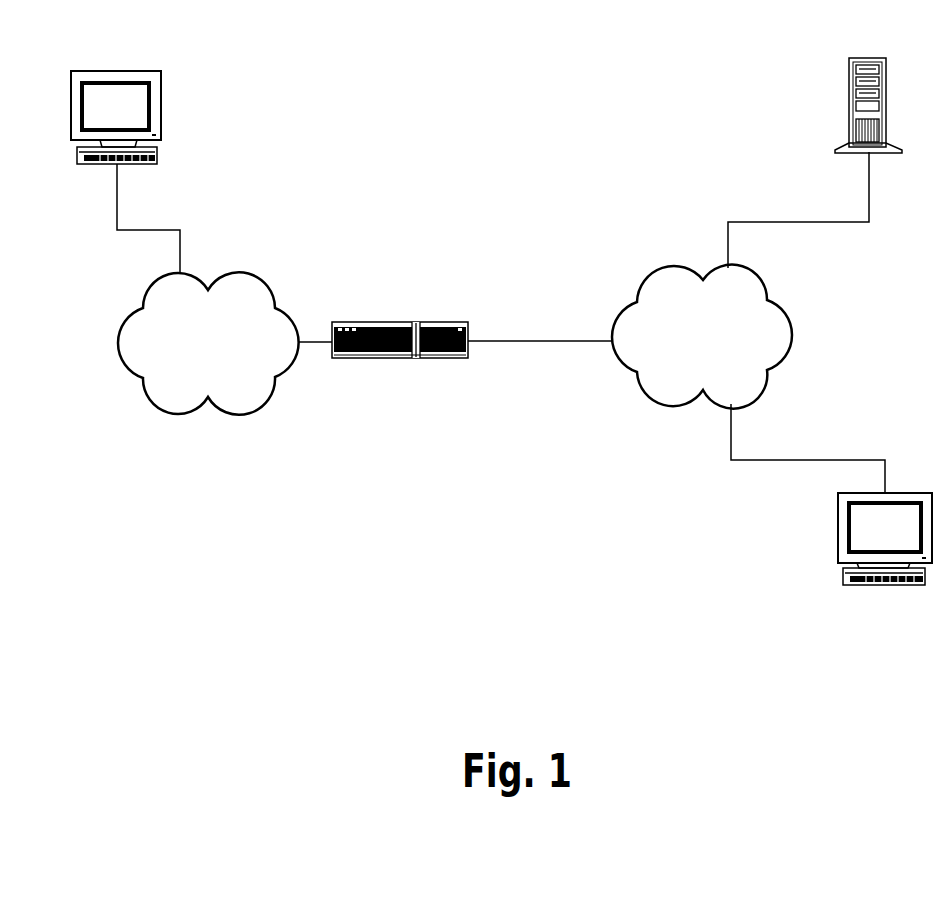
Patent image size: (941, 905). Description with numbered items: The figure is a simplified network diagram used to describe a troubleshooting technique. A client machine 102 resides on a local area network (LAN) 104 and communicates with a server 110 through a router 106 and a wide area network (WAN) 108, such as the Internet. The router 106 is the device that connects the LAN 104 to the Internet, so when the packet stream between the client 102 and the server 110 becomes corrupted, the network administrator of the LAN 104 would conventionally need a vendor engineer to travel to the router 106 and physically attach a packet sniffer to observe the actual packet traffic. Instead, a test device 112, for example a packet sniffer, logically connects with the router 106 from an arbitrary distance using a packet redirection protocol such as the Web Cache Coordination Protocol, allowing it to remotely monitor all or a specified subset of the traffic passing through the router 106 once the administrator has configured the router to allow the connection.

The client machine 102 is at (161, 110).
The local area network (LAN) 104 is at (233, 273).
The router 106 is at (398, 323).
The wide area network (WAN) 108 is at (675, 265).
The server 110 is at (849, 99).
The test device 112 is at (838, 537).